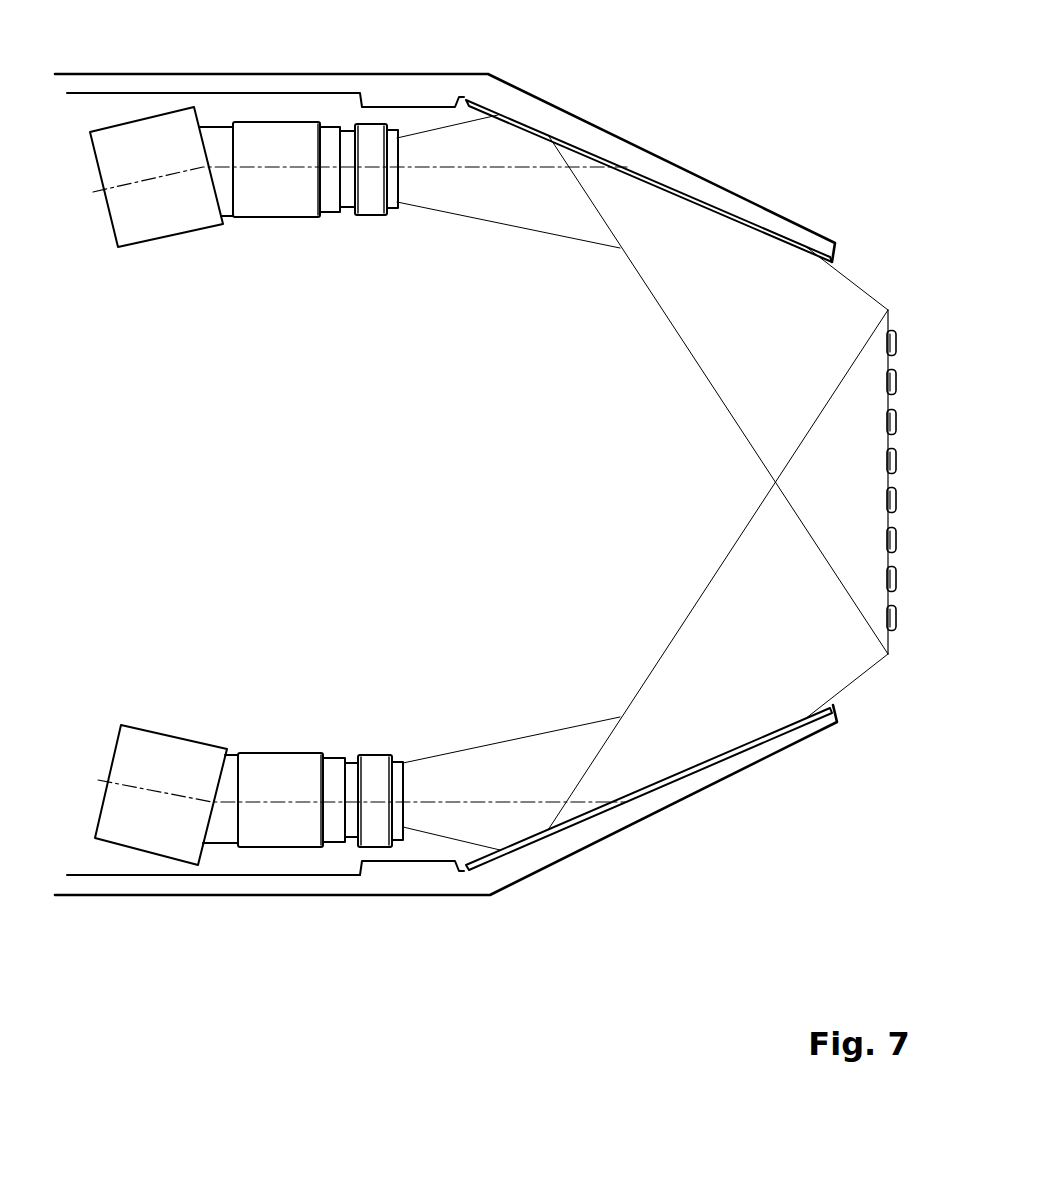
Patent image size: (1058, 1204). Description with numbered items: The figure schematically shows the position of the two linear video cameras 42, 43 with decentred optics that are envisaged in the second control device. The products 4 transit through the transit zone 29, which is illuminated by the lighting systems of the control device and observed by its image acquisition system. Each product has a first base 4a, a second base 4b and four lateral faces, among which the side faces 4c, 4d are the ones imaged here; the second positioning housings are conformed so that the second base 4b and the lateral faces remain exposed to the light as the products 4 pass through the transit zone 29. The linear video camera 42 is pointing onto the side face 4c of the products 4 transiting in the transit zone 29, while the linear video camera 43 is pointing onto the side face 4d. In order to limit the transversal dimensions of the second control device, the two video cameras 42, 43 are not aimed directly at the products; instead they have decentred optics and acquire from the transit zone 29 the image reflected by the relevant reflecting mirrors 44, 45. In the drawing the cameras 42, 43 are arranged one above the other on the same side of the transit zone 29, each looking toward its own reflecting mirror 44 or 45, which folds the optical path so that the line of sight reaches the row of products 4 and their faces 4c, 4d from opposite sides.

The linear video camera 43 is at (367, 146).
The linear video camera 42 is at (376, 812).
The reflecting mirror 45 is at (690, 182).
The reflecting mirror 44 is at (722, 779).
The transit zone 29 is at (878, 482).
The products 4 is at (878, 539).
The first base 4a is at (897, 343).
The second base 4b is at (886, 343).
The side face 4c is at (892, 631).
The side face 4d is at (895, 598).